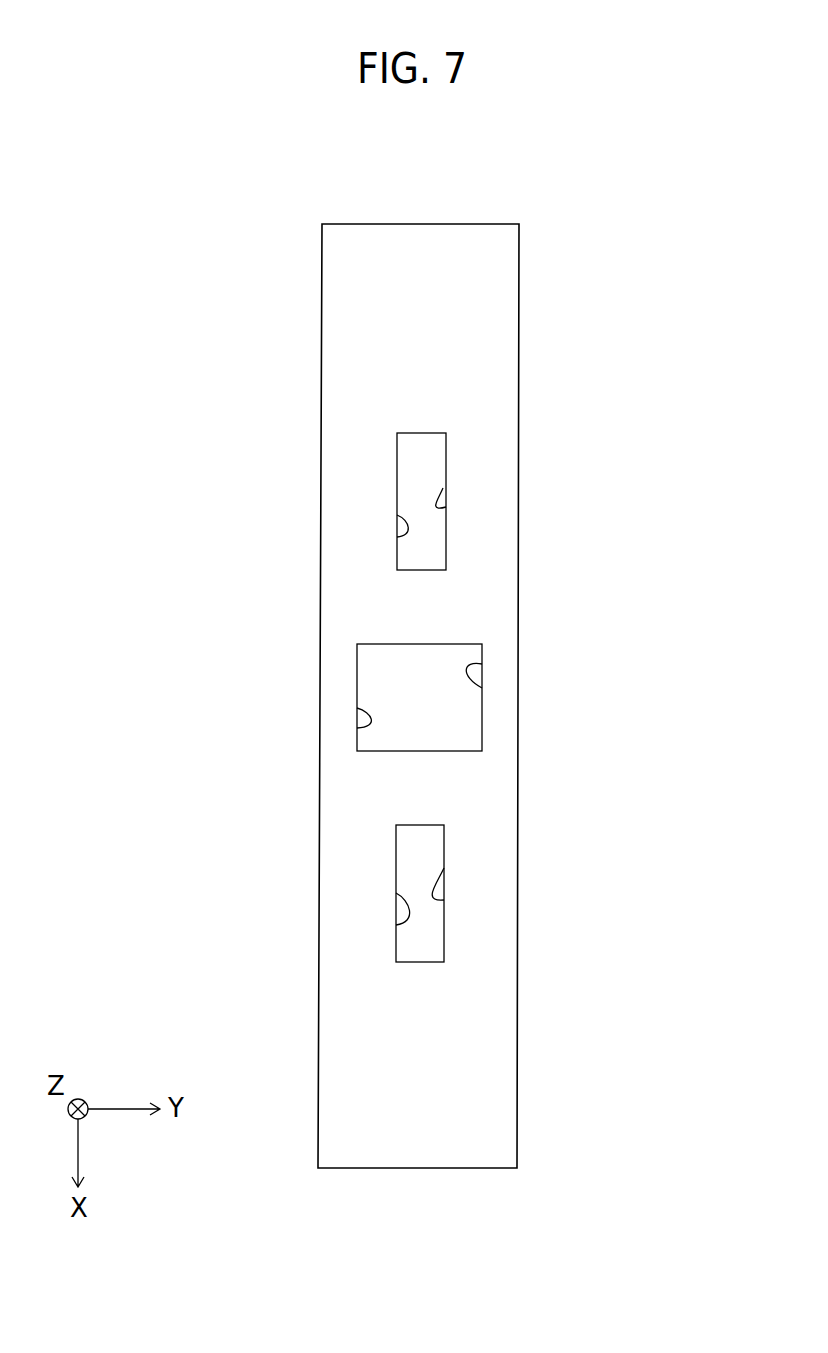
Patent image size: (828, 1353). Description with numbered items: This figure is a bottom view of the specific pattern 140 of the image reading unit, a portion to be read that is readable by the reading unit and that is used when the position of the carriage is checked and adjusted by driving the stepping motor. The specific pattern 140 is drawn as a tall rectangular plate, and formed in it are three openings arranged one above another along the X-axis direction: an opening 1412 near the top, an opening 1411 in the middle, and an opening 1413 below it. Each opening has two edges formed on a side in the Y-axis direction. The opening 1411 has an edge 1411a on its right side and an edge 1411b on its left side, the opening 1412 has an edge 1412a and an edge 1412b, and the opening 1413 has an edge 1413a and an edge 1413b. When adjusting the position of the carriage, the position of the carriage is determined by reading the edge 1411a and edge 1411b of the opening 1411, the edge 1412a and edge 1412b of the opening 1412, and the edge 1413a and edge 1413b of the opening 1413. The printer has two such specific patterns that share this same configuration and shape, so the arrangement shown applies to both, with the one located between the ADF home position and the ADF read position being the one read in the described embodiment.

The specific pattern 140 is at (427, 224).
The opening 1411 is at (419, 644).
The edge 1411a is at (482, 664).
The edge 1411b is at (357, 728).
The opening 1412 is at (430, 433).
The edge 1412a is at (446, 507).
The edge 1412b is at (397, 537).
The opening 1413 is at (420, 825).
The edge 1413a is at (444, 900).
The edge 1413b is at (396, 926).